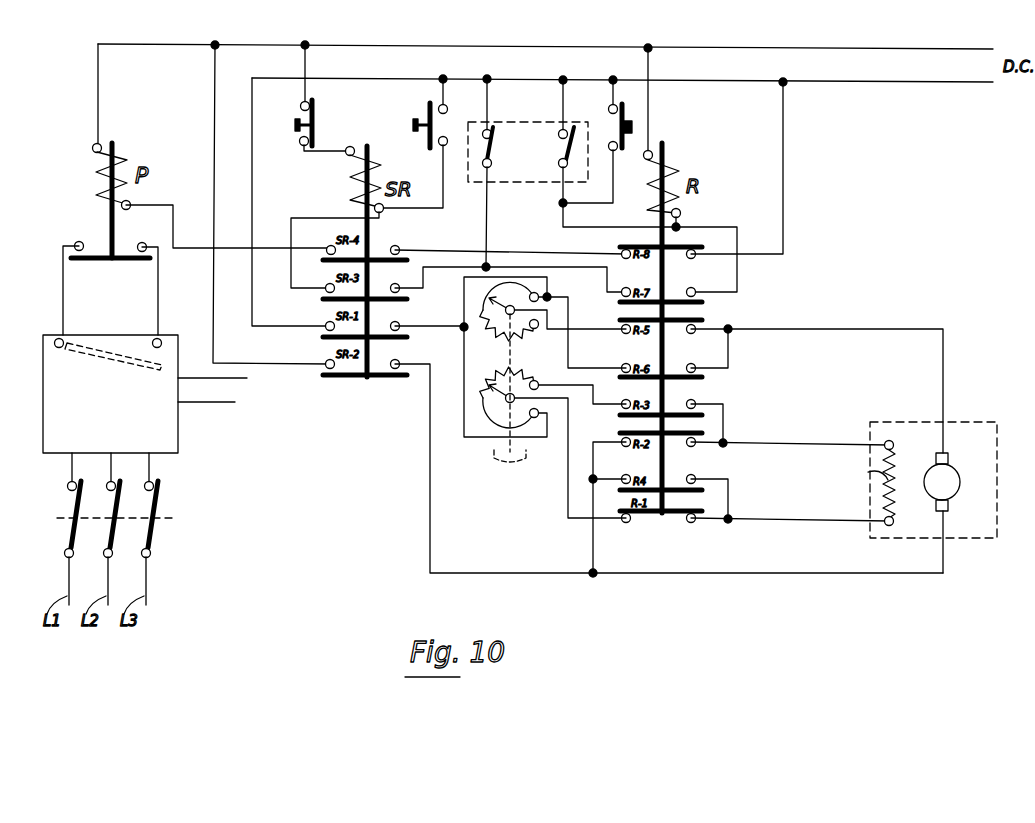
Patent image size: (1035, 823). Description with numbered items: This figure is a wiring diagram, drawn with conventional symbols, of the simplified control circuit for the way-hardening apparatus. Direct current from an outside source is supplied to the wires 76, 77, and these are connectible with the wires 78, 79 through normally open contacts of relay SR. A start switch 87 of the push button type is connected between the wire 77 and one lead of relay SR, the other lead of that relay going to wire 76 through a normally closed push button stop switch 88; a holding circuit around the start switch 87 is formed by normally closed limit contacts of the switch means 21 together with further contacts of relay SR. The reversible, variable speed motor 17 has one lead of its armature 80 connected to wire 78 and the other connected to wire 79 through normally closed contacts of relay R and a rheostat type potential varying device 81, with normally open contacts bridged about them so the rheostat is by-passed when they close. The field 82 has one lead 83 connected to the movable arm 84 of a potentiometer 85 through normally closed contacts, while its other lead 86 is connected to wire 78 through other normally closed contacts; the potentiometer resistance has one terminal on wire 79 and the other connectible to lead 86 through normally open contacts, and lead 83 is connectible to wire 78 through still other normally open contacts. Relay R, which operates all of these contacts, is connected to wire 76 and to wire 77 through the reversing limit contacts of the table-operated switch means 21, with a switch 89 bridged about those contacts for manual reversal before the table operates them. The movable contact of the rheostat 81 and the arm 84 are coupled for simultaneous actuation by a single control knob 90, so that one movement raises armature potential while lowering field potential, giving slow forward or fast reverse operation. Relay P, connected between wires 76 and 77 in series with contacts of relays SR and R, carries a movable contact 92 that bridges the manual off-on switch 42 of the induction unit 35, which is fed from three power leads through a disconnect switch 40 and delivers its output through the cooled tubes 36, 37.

The wire 76 is at (635, 47).
The wire 77 is at (937, 83).
The stop switch 88 is at (302, 116).
The start switch 87 is at (427, 143).
The reversing switch mechanism 21 is at (526, 122).
The switch 89 is at (638, 96).
The movable contact 92 is at (123, 256).
The induction unit 35 is at (179, 345).
The off-on switch 42 is at (122, 359).
The hollow copper tube 36 is at (252, 380).
The hollow copper tube 37 is at (240, 404).
The disconnect switch 40 is at (173, 518).
The wire 79 is at (442, 324).
The wire 78 is at (524, 574).
The potential varying device 81 is at (494, 294).
The potentiometer 85 is at (501, 377).
The movable arm 84 is at (495, 419).
The control knob 90 is at (520, 468).
The lead 86 is at (807, 442).
The lead 83 is at (791, 523).
The field 82 is at (916, 456).
The armature 80 is at (961, 482).
The electric motor 17 is at (914, 482).